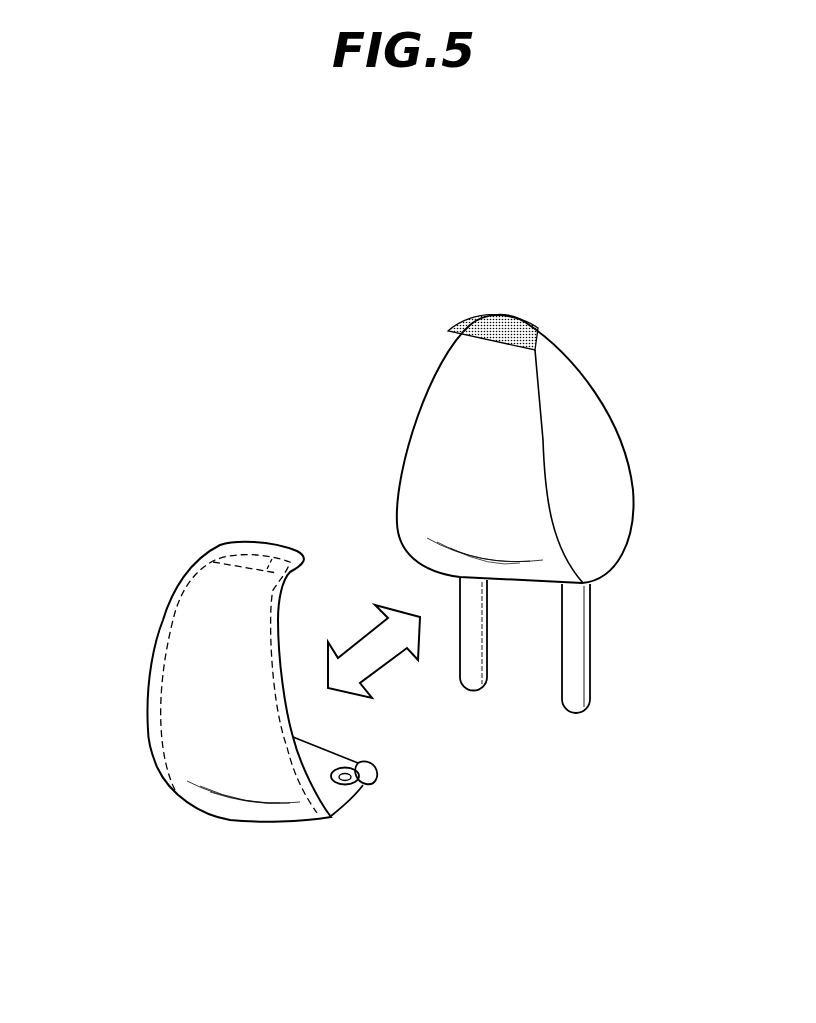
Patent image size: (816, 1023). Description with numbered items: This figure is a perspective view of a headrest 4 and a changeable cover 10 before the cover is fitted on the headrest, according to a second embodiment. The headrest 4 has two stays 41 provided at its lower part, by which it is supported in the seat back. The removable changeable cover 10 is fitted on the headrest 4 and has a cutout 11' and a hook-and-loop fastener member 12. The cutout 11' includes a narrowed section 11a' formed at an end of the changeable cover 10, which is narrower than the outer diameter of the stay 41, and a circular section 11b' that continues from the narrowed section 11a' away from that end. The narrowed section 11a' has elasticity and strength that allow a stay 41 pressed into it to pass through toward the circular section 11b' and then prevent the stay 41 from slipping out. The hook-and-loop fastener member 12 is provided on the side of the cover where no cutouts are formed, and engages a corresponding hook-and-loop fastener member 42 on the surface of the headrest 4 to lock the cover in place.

The headrest 4 is at (510, 475).
The hook-and-loop fastener member 42 is at (497, 313).
The stays 41 is at (473, 658).
The changeable cover 10 is at (193, 685).
The hook-and-loop fastener member 12 is at (283, 547).
The cutout 11' is at (413, 792).
The narrowed section 11a' is at (406, 775).
The circular section 11b' is at (418, 803).